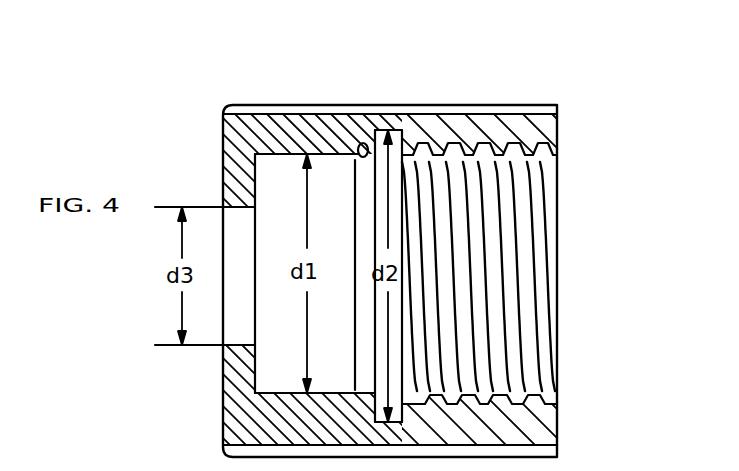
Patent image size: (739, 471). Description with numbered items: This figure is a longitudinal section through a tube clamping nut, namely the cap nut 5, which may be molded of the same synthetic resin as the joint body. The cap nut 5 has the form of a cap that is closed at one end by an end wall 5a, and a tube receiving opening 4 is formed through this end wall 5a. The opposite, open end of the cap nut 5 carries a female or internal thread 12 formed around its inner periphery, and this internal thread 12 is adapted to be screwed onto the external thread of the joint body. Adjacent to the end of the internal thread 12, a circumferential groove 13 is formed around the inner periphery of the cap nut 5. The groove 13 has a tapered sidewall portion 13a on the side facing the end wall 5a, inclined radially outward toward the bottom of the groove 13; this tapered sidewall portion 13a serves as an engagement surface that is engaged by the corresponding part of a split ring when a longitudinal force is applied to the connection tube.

The cap nut 5 is at (503, 101).
The end wall 5a is at (228, 369).
The tube receiving opening 4 is at (243, 345).
The internal thread 12 is at (532, 398).
The circumferential groove 13 is at (386, 128).
The tapered sidewall portion 13a is at (360, 145).